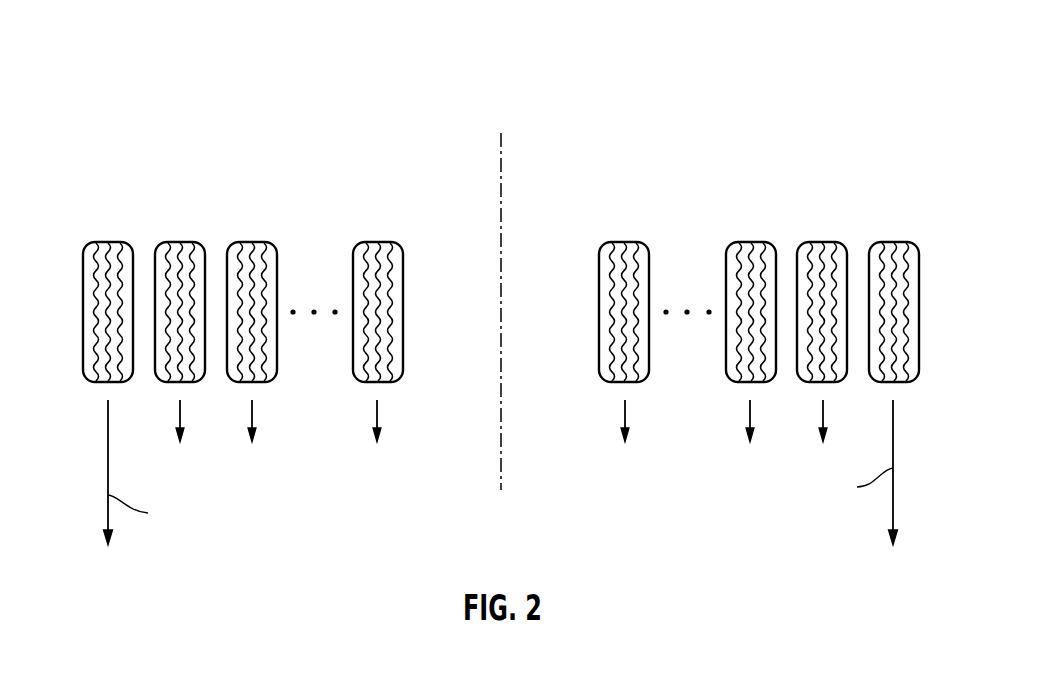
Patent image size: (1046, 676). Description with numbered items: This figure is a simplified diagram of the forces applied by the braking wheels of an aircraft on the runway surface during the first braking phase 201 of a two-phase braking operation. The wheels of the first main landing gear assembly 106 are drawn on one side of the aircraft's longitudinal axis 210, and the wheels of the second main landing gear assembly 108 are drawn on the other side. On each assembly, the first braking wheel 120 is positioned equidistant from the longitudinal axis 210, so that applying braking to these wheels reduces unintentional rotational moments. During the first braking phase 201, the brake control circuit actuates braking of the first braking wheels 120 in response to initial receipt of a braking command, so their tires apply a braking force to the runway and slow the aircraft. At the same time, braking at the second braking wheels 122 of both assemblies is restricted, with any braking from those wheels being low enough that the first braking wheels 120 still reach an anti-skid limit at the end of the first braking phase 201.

The first braking phase 201 is at (628, 37).
The first main landing gear assembly 106 is at (190, 137).
The second main landing gear assembly 108 is at (820, 143).
The first braking wheel 120 is at (110, 242).
The second braking wheel 122 is at (180, 242).
The longitudinal axis 210 is at (502, 160).